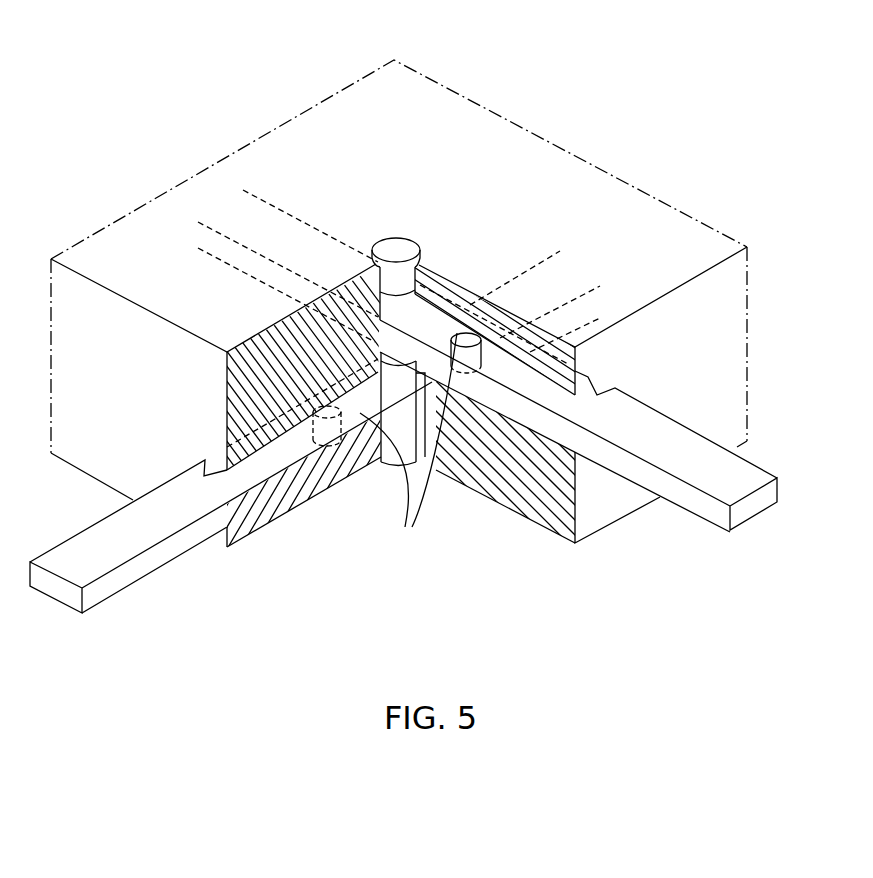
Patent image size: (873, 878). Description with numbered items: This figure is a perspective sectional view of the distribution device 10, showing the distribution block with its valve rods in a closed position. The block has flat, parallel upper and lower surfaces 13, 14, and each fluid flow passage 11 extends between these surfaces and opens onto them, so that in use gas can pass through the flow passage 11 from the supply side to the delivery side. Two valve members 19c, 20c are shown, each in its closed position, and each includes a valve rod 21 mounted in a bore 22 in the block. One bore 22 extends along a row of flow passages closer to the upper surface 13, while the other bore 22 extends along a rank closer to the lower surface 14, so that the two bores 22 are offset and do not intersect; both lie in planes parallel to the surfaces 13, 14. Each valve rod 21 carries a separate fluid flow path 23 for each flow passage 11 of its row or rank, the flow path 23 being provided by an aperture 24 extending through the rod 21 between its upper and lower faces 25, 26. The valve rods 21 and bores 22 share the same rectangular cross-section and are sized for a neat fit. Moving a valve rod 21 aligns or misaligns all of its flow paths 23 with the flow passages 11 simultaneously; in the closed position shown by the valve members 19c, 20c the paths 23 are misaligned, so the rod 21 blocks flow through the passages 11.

The block 10 is at (470, 92).
The fluid flow passage 11 is at (405, 254).
The upper surface 13 is at (615, 185).
The lower surface 14 is at (516, 517).
The valve member in closed position 19c is at (87, 514).
The valve member in closed position 20c is at (763, 445).
The valve rod 21 is at (72, 600).
The bore 22 is at (200, 462).
The fluid flow path 23 is at (296, 443).
The aperture 24 is at (408, 442).
The upper face 25 is at (143, 527).
The lower face 26 is at (128, 593).